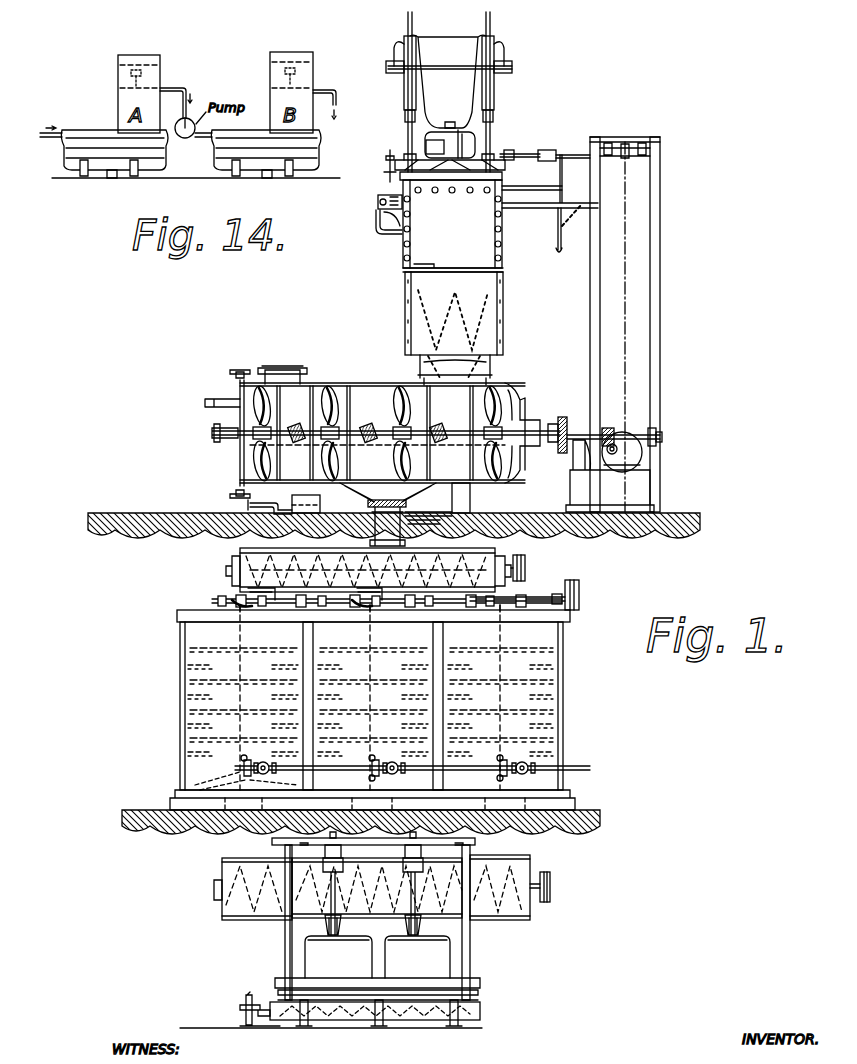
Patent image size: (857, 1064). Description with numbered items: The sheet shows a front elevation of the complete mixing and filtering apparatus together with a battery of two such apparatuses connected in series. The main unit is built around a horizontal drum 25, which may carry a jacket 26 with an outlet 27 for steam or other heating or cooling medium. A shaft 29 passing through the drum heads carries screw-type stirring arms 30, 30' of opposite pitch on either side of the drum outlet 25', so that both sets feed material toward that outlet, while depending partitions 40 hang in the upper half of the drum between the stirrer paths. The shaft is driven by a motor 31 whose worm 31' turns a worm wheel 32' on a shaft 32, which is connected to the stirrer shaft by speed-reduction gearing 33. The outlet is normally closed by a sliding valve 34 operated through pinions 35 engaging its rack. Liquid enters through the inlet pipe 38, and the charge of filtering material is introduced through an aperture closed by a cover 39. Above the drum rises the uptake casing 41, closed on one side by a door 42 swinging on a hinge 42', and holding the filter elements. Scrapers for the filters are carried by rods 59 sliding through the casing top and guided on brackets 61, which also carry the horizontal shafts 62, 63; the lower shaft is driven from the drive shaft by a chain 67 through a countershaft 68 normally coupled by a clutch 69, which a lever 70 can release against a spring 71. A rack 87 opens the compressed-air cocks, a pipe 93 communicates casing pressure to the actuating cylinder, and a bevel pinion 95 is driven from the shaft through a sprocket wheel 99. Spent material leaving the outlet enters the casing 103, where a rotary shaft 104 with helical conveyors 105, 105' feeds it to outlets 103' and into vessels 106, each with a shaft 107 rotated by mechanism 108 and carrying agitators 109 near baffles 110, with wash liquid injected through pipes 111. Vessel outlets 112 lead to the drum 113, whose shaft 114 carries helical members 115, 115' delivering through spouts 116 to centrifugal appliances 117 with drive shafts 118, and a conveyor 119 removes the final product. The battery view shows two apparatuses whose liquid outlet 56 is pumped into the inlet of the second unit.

In FIG. 1, the horizontal drum 25 is at (385, 418).
In FIG. 14, the drum outlet 25' is at (204, 189).
In FIG. 1, the drum outlet 25' is at (388, 495).
In FIG. 1, the jacket 26 is at (322, 498).
In FIG. 1, the jacket outlet 27 is at (250, 504).
In FIG. 1, the shaft 29 is at (272, 446).
In FIG. 1, the mixing arms 30 is at (304, 433).
In FIG. 1, the mixing arms 30' is at (470, 433).
In FIG. 1, the motor 31 is at (656, 452).
In FIG. 1, the worm 31' is at (610, 476).
In FIG. 1, the shaft 32 is at (676, 419).
In FIG. 1, the worm wheel 32' is at (613, 412).
In FIG. 1, the speed-reduction gearing 33 is at (570, 418).
In FIG. 1, the valve 34 is at (387, 526).
In FIG. 1, the pinions 35 is at (394, 529).
In FIG. 14, the inlet pipe 38 is at (195, 140).
In FIG. 1, the inlet pipe 38 is at (214, 398).
In FIG. 1, the cover 39 is at (290, 368).
In FIG. 1, the partitions 40 is at (326, 386).
In FIG. 1, the uptake casing 41 is at (478, 313).
In FIG. 1, the door 42 is at (452, 224).
In FIG. 1, the hinge 42' is at (429, 287).
In FIG. 14, the liquid outlet 56 is at (339, 99).
In FIG. 1, the rods 59 is at (486, 22).
In FIG. 1, the brackets 61 is at (480, 93).
In FIG. 1, the upper shaft 62 is at (448, 66).
In FIG. 1, the shaft 63 is at (516, 156).
In FIG. 1, the chain 67 is at (630, 285).
In FIG. 1, the countershaft 68 is at (585, 150).
In FIG. 1, the clutch 69 is at (550, 150).
In FIG. 1, the lever 70 is at (556, 240).
In FIG. 1, the spring 71 is at (572, 225).
In FIG. 1, the rack 87 is at (512, 188).
In FIG. 1, the pipe 93 is at (386, 236).
In FIG. 1, the bevel pinion 95 is at (378, 202).
In FIG. 1, the sprocket wheel 99 is at (390, 152).
In FIG. 1, the casing 103 is at (337, 570).
In FIG. 1, the outlets 103' is at (370, 697).
In FIG. 1, the rotary shaft 104 is at (527, 558).
In FIG. 1, the helical conveyor member 105 is at (367, 600).
In FIG. 1, the helical conveyor member 105' is at (523, 557).
In FIG. 1, the vessels 106 is at (548, 635).
In FIG. 1, the shaft 107 is at (540, 670).
In FIG. 1, the mechanism 108 is at (560, 592).
In FIG. 1, the agitators 109 is at (550, 735).
In FIG. 1, the baffles 110 is at (548, 716).
In FIG. 1, the pipes 111 is at (565, 768).
In FIG. 1, the outlets 112 is at (530, 846).
In FIG. 1, the drum 113 is at (520, 905).
In FIG. 1, the rotary shaft 114 is at (552, 886).
In FIG. 1, the helical member 115 is at (253, 906).
In FIG. 1, the helical member 115' is at (500, 904).
In FIG. 1, the spouts 116 is at (422, 925).
In FIG. 1, the centrifugal appliances 117 is at (377, 957).
In FIG. 1, the drive shafts 118 is at (408, 876).
In FIG. 1, the conveyor 119 is at (416, 1016).